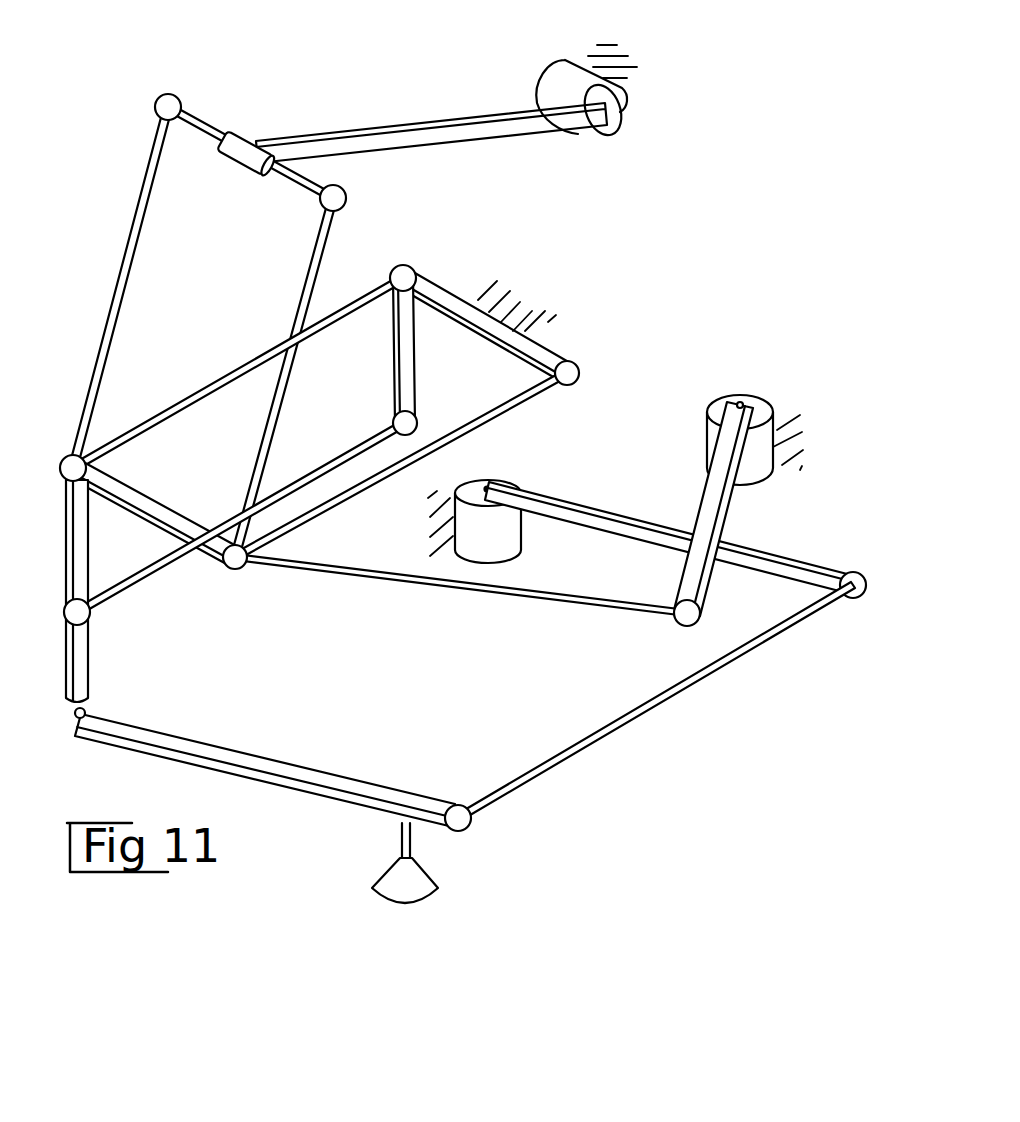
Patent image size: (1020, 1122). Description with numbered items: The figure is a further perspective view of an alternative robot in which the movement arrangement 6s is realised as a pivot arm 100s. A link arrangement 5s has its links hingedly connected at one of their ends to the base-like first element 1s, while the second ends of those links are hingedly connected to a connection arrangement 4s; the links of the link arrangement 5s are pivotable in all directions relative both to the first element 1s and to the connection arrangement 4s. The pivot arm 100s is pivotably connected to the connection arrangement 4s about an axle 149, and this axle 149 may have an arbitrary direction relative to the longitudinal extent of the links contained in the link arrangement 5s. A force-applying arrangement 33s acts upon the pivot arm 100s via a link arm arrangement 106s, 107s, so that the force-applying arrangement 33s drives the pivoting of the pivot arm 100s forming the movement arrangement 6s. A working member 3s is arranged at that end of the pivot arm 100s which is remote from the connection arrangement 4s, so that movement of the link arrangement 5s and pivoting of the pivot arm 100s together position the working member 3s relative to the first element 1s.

The base-like first element 1s is at (521, 312).
The link arrangement 5s is at (221, 374).
The force-applying arrangement 33s is at (503, 540).
The link arm arrangement 106s is at (780, 570).
The link arm arrangement 107s is at (680, 700).
The connection arrangement 4s is at (93, 657).
The axle 149 is at (120, 718).
The movement arrangement 6s is at (382, 756).
The pivot arm 100s is at (322, 780).
The working member 3s is at (413, 887).